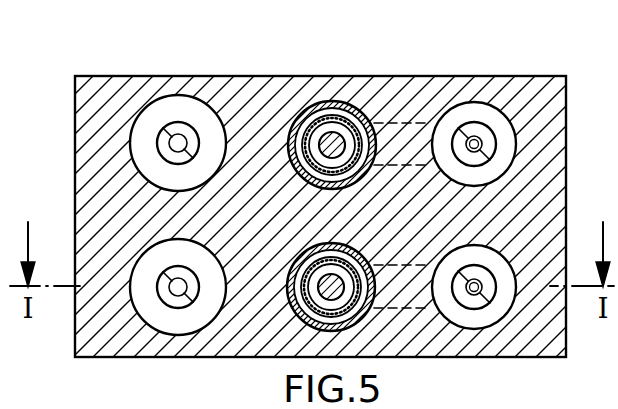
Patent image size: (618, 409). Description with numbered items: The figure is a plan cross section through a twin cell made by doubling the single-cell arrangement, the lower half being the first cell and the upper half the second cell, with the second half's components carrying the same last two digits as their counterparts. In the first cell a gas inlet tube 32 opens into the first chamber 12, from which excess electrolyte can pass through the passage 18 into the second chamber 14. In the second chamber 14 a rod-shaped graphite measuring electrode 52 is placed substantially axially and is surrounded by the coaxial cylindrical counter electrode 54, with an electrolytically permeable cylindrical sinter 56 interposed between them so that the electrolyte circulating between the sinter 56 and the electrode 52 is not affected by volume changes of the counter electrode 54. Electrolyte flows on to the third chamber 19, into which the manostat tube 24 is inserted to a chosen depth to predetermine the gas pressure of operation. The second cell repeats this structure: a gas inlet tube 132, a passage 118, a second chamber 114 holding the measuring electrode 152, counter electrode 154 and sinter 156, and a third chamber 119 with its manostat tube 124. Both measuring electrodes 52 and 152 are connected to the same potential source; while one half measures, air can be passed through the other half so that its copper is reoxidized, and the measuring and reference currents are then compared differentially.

The first chamber 12 is at (510, 304).
The second chamber 14 is at (362, 316).
The passage 18 is at (420, 303).
The third chamber 19 is at (158, 330).
The manostat tube 24 is at (160, 290).
The gas inlet tube 32 is at (488, 306).
The measuring electrode 52 is at (318, 288).
The counter electrode 54 is at (310, 321).
The cylindrical sinter 56 is at (308, 302).
The second chamber 114 is at (360, 112).
The passage 118 is at (410, 130).
The third chamber 119 is at (198, 96).
The manostat tube 124 is at (172, 127).
The gas inlet tube 132 is at (481, 123).
The measuring electrode 152 is at (333, 133).
The counter electrode 154 is at (305, 117).
The cylindrical sinter 156 is at (320, 118).